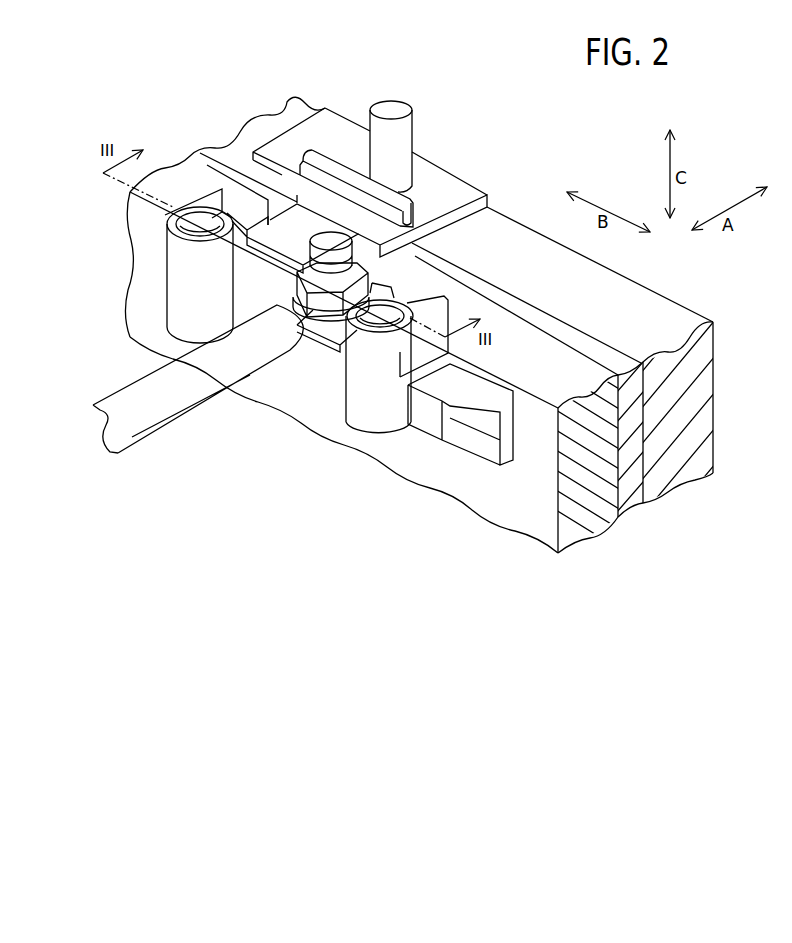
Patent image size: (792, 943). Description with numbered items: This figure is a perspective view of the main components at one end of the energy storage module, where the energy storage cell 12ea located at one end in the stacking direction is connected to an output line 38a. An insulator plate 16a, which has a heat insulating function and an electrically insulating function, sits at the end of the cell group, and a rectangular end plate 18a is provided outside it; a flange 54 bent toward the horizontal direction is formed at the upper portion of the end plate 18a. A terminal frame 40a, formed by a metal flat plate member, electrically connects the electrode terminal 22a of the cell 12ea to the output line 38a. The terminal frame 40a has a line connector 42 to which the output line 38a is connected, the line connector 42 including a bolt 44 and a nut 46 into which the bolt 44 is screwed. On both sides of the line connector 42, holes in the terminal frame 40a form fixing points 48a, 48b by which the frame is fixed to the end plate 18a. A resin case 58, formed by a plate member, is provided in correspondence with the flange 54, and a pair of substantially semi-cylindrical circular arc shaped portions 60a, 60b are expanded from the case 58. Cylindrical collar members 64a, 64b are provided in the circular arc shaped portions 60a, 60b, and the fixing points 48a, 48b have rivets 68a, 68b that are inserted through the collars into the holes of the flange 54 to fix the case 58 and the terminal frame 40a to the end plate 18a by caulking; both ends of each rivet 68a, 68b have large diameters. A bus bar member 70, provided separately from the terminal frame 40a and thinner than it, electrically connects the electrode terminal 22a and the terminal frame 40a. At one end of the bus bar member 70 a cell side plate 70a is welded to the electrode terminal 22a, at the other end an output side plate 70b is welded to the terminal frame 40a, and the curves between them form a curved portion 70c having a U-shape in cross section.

The energy storage cell 12ea is at (675, 315).
The insulator plate 16a is at (632, 507).
The end plate 18a is at (497, 519).
The electrode terminal 22a is at (397, 107).
The output line 38a is at (158, 417).
The terminal frame 40a is at (253, 213).
The line connector 42 is at (299, 366).
The bolt 44 is at (308, 295).
The nut 46 is at (327, 268).
The fixing point 48a is at (146, 225).
The fixing point 48b is at (419, 391).
The flange 54 is at (463, 413).
The case 58 is at (332, 389).
The circular arc shaped portion 60a is at (175, 312).
The circular arc shaped portion 60b is at (367, 428).
The collar member 64a is at (205, 207).
The collar member 64b is at (410, 298).
The rivet 68a is at (198, 238).
The rivet 68b is at (383, 329).
The bus bar member 70 is at (357, 178).
The cell side plate 70a is at (443, 190).
The output side plate 70b is at (286, 243).
The curved portion 70c is at (318, 158).